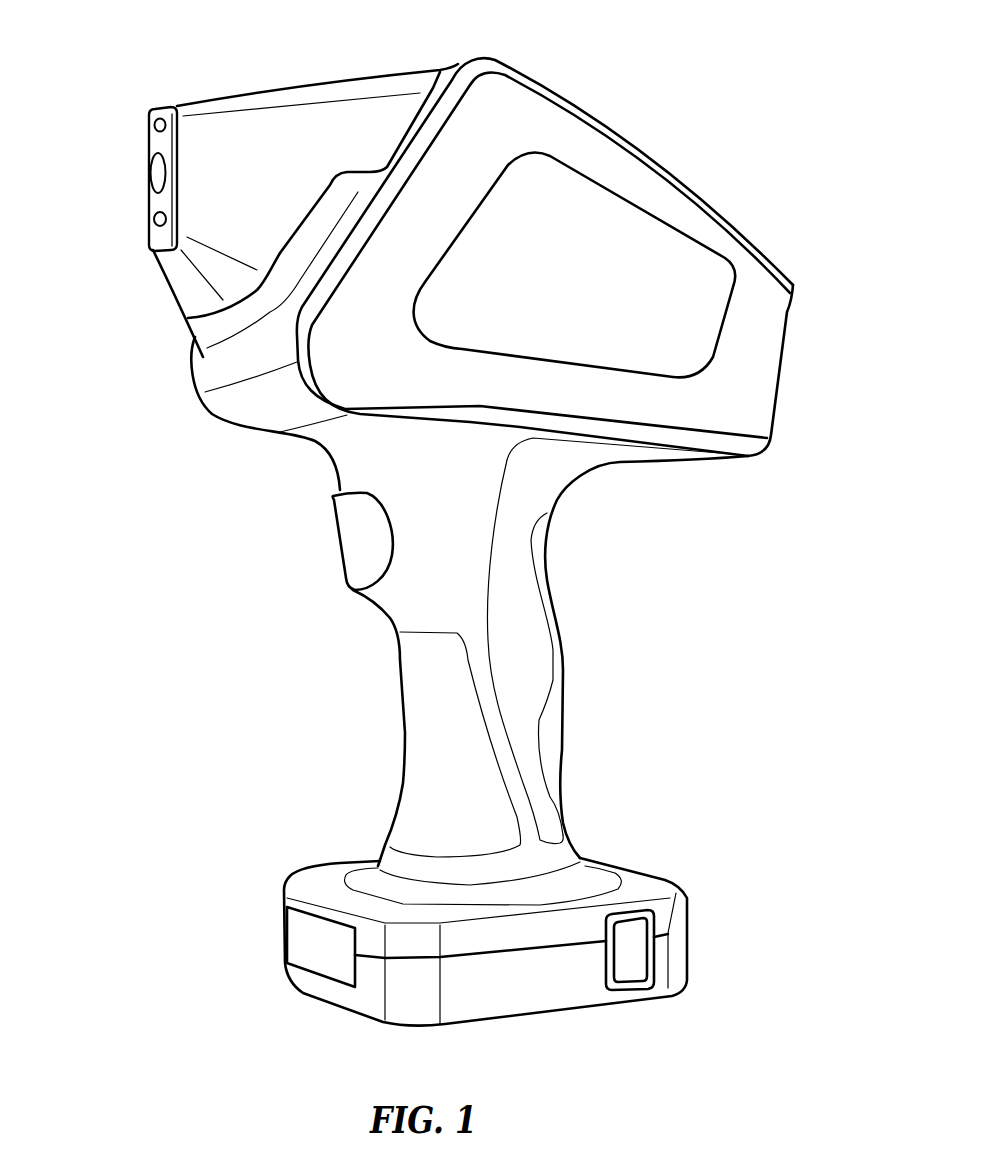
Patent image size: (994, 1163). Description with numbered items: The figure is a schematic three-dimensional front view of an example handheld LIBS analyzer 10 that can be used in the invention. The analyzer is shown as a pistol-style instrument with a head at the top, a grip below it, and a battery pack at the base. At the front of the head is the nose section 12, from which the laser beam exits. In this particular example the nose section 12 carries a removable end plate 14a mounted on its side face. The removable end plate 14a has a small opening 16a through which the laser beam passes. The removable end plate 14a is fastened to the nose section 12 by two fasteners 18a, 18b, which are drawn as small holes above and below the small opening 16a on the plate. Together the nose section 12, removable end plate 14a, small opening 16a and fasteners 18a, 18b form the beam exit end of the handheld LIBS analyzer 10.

The handheld LIBS analyzer 10 is at (592, 60).
The nose section 12 is at (245, 104).
The removable end plate 14a is at (158, 203).
The small opening 16a is at (160, 170).
The fastener 18a is at (153, 125).
The fastener 18b is at (154, 220).